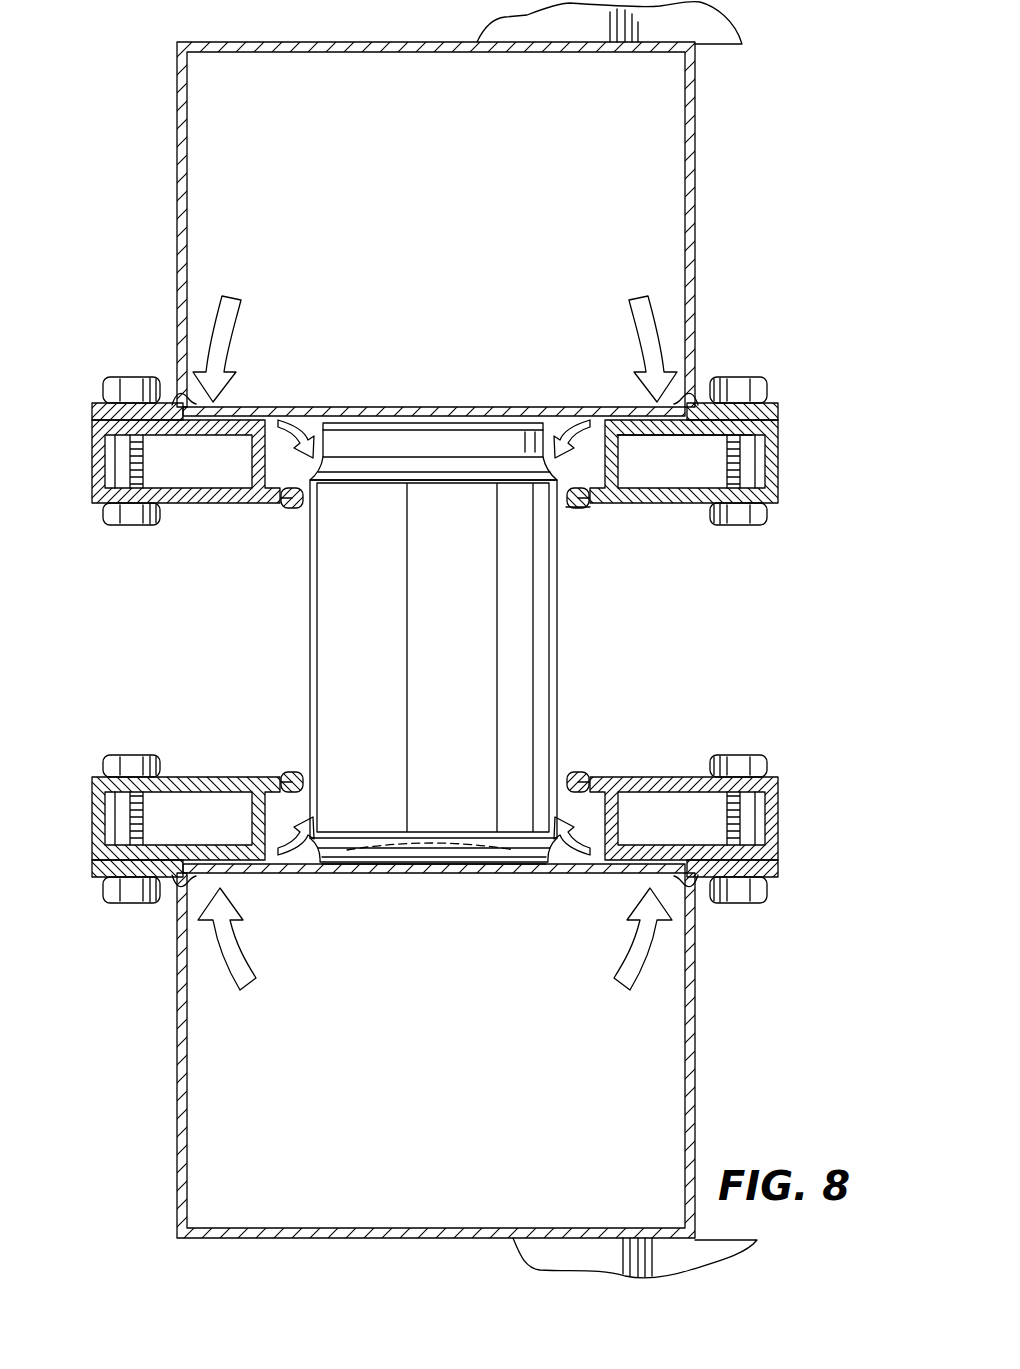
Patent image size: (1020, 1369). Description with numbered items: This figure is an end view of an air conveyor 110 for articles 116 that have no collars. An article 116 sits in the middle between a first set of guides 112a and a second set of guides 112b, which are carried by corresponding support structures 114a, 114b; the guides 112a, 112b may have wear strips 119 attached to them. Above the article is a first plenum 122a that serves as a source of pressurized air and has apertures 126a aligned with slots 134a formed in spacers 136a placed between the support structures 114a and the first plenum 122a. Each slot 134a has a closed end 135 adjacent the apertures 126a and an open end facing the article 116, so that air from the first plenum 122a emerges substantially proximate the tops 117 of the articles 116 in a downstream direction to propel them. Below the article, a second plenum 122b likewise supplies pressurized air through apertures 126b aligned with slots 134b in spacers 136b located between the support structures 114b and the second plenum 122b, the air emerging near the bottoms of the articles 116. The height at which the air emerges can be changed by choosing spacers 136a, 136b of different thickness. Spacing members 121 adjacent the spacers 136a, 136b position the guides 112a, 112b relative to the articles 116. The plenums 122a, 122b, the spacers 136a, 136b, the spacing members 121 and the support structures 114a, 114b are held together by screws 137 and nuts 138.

The air conveyor 110 is at (437, 204).
The first set of guides 112a is at (286, 510).
The second set of guides 112b is at (287, 775).
The support structure 114a is at (185, 506).
The support structure 114b is at (186, 775).
The article 116 is at (557, 661).
The top of article 117 is at (328, 405).
The wear strip 119 is at (575, 515).
The spacing member 121 is at (85, 402).
The first plenum 122a is at (697, 232).
The second plenum 122b is at (697, 1058).
The aperture 126a is at (192, 405).
The aperture 126b is at (248, 878).
The slot 134a is at (628, 420).
The slot 134b is at (196, 876).
The closed end 135 is at (690, 418).
The spacer 136a is at (780, 413).
The spacer 136b is at (83, 882).
The screw 137 is at (760, 378).
The nut 138 is at (752, 528).